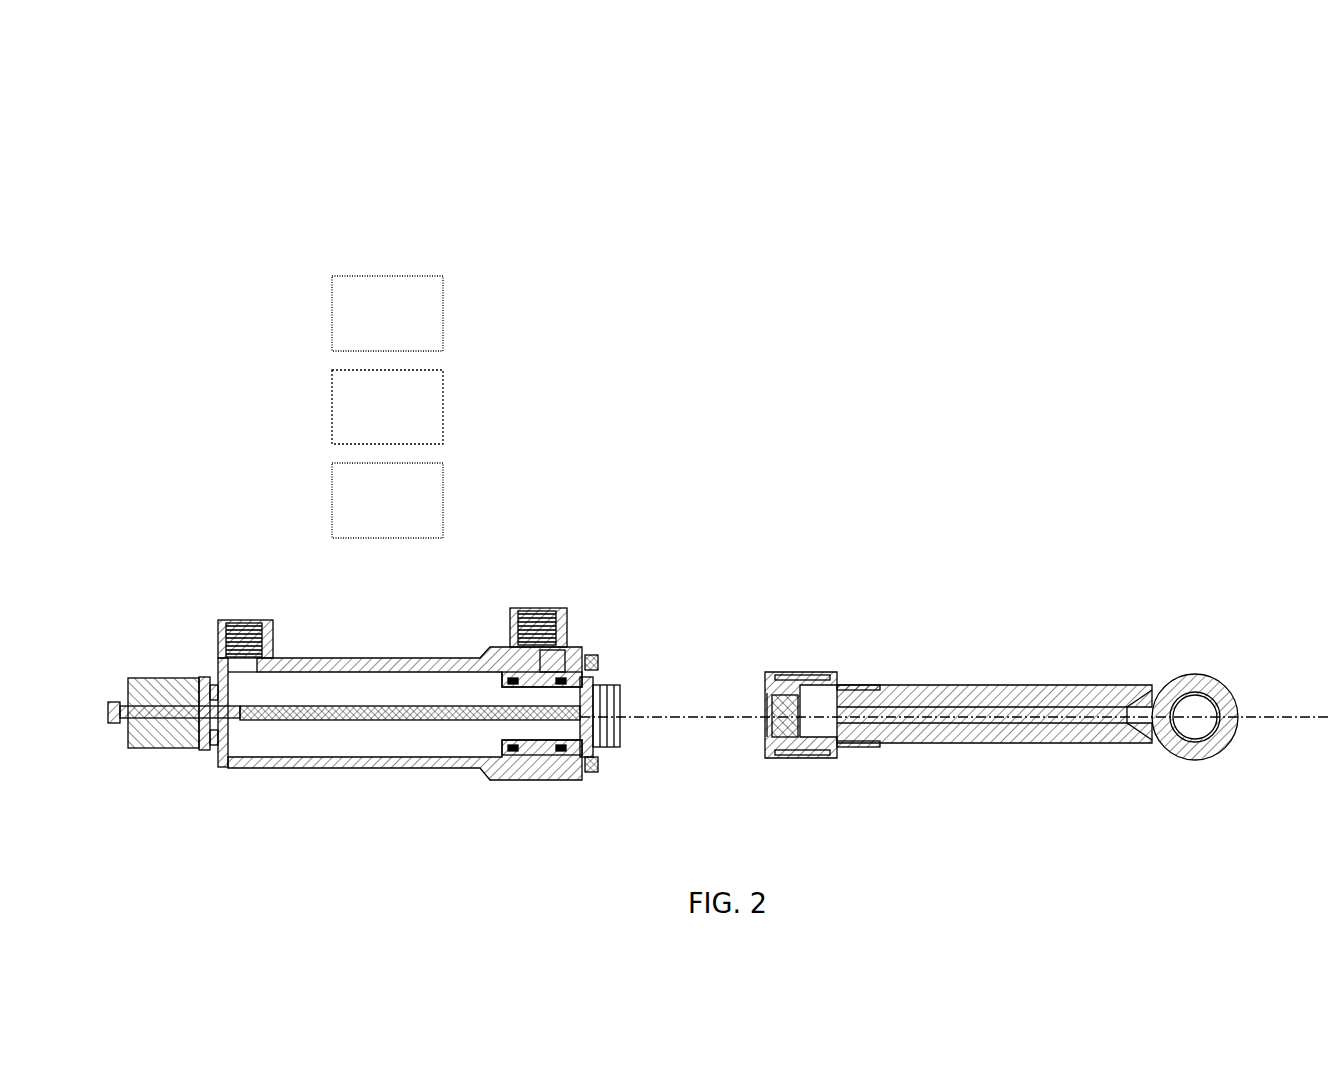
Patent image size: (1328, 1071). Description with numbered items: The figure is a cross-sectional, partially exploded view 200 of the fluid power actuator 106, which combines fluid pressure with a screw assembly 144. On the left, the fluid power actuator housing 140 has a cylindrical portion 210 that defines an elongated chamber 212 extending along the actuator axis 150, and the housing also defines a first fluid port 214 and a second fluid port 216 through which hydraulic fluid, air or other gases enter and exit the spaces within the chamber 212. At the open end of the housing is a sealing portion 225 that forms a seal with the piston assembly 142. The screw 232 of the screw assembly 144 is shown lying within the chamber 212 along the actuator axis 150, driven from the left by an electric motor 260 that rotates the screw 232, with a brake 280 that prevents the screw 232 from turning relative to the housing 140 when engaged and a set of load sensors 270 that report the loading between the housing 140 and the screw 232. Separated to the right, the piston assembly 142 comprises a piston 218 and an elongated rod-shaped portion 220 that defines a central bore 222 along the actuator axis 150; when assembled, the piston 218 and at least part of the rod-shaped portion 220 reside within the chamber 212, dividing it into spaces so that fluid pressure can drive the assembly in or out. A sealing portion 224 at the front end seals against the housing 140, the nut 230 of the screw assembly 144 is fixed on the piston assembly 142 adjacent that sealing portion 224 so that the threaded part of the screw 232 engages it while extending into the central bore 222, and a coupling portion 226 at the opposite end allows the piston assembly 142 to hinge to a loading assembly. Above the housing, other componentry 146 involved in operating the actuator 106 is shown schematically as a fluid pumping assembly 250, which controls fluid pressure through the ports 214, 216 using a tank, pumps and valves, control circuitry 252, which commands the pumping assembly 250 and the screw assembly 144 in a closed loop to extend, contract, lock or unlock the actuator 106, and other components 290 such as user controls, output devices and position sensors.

The cross-sectional, partially exploded view 200 is at (1238, 93).
The fluid power actuator 106 is at (940, 200).
The other componentry 146 is at (335, 374).
The fluid pumping assembly 250 is at (387, 313).
The control circuitry 252 is at (387, 407).
The other components 290 is at (387, 500).
The fluid power actuator housing 140 is at (372, 682).
The cylindrical portion 210 is at (413, 660).
The elongated chamber 212 is at (410, 729).
The first fluid port 214 is at (232, 595).
The second fluid port 216 is at (522, 590).
The sealing portion 225 is at (622, 676).
The screw 232 is at (330, 740).
The electric motor 260 is at (140, 678).
The brake 280 is at (180, 712).
The set of load sensors 270 is at (216, 672).
The screw assembly 144 is at (203, 793).
The piston assembly 142 is at (954, 706).
The piston 218 is at (762, 746).
The sealing portion 224 is at (770, 672).
The rod-shaped portion 220 is at (1010, 688).
The nut 230 is at (790, 758).
The central bore 222 is at (1107, 742).
The coupling portion 226 is at (1185, 670).
The actuator axis 150 is at (1278, 718).